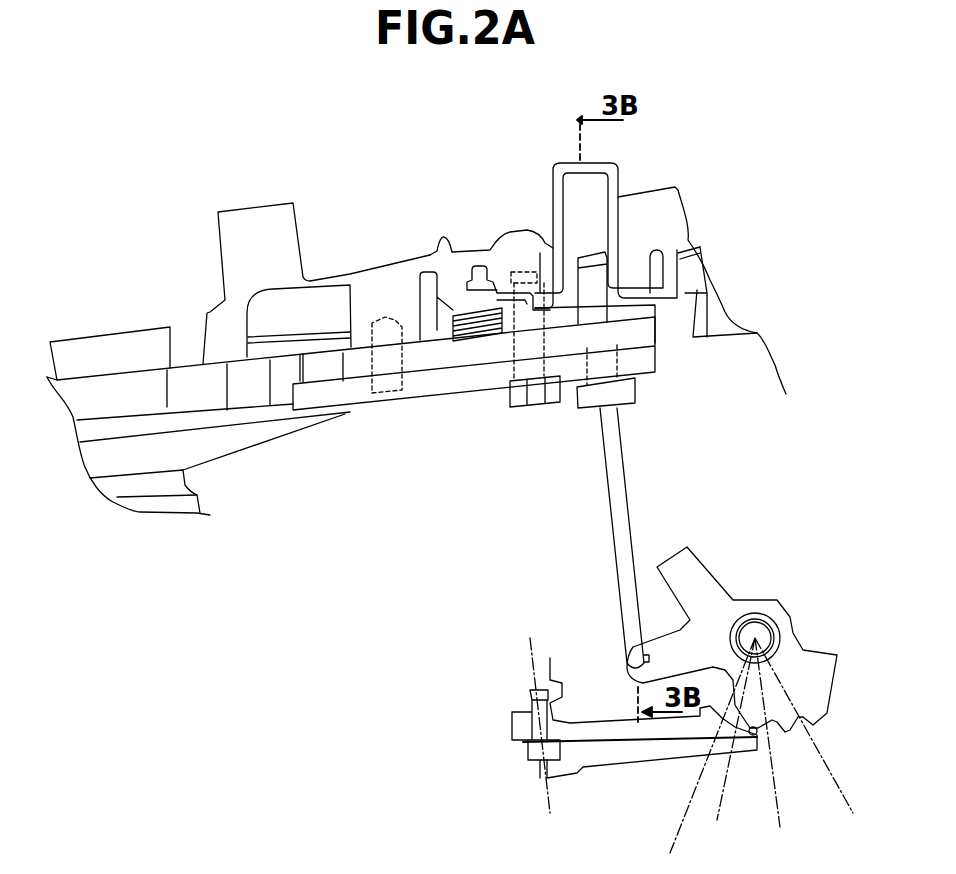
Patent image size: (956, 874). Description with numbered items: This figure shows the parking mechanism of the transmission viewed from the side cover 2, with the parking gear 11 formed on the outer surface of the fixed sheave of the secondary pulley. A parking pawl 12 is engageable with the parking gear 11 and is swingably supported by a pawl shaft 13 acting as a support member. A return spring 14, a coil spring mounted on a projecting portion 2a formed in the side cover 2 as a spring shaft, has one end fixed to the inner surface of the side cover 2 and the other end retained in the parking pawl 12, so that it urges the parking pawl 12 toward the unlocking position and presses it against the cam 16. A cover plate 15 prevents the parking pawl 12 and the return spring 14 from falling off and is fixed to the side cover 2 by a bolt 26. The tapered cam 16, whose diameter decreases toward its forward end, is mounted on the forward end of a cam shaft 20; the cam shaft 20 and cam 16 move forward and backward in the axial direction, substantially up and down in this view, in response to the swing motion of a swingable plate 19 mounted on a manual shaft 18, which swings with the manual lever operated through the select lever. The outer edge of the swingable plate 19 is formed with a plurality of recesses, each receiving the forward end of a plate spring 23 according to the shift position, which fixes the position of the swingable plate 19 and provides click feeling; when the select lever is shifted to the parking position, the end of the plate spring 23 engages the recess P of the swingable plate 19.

The side cover 2 is at (527, 230).
The projecting portion 2a is at (430, 300).
The parking gear 11 is at (250, 393).
The parking pawl 12 is at (425, 270).
The pawl shaft 13 is at (372, 323).
The return spring 14 is at (467, 305).
The cover plate 15 is at (437, 397).
The cam 16 is at (640, 378).
The manual shaft 18 is at (754, 620).
The swingable plate 19 is at (790, 613).
The cam shaft 20 is at (634, 468).
The plate spring 23 is at (643, 750).
The bolt 26 is at (540, 410).
The recess P is at (766, 747).